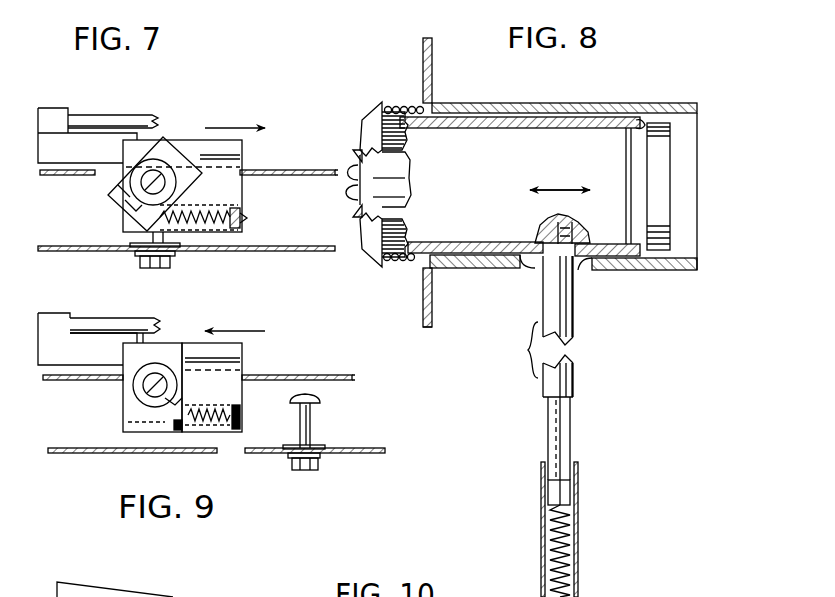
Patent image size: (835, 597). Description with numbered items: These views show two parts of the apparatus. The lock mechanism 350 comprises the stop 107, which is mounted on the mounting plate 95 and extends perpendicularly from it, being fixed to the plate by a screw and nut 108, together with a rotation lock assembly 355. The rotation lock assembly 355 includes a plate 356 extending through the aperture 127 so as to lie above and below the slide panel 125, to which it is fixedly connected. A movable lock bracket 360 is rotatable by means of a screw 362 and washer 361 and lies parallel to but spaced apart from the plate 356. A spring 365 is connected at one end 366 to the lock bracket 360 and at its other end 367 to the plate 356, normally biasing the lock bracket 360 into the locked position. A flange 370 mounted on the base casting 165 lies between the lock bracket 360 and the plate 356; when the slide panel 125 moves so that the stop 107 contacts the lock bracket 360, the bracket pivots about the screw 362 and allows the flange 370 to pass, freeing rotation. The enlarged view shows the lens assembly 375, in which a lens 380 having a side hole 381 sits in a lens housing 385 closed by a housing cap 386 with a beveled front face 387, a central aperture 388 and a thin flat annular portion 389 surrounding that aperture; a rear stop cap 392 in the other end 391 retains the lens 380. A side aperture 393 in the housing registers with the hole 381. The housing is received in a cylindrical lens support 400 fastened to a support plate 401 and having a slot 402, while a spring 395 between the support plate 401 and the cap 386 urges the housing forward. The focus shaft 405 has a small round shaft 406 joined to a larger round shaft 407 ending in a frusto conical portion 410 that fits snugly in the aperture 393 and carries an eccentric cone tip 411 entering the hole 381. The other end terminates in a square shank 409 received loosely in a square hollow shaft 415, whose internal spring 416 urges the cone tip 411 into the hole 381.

In FIG. 7, the flange 370 is at (93, 150).
In FIG. 9, the flange 370 is at (80, 352).
In FIG. 7, the base casting 165 is at (138, 118).
In FIG. 9, the base casting 165 is at (140, 325).
In FIG. 7, the lock mechanism 350 is at (278, 88).
In FIG. 9, the lock mechanism 350 is at (208, 317).
In FIG. 7, the aperture 127 is at (248, 170).
In FIG. 9, the aperture 127 is at (246, 374).
In FIG. 7, the slide panel 125 is at (316, 161).
In FIG. 9, the slide panel 125 is at (306, 376).
In FIG. 7, the rotation lock assembly 355 is at (100, 190).
In FIG. 9, the rotation lock assembly 355 is at (118, 393).
In FIG. 7, the plate 356 is at (233, 192).
In FIG. 7, the lock bracket 360 is at (113, 193).
In FIG. 9, the lock bracket 360 is at (130, 413).
In FIG. 9, the washer 361 is at (135, 388).
In FIG. 9, the screw 362 is at (163, 391).
In FIG. 7, the spring 365 is at (217, 222).
In FIG. 9, the spring 365 is at (223, 442).
In FIG. 9, the spring end 366 is at (167, 420).
In FIG. 9, the spring end 367 is at (243, 420).
In FIG. 7, the stop 107 is at (147, 238).
In FIG. 9, the stop 107 is at (310, 413).
In FIG. 7, the screw and nut 108 is at (170, 265).
In FIG. 9, the screw and nut 108 is at (320, 467).
In FIG. 7, the mounting plate 95 is at (292, 246).
In FIG. 9, the mounting plate 95 is at (379, 447).
In FIG. 8, the lens assembly 375 is at (650, 94).
In FIG. 8, the lens 380 is at (548, 164).
In FIG. 8, the lens housing 385 is at (462, 117).
In FIG. 8, the housing cap 386 is at (363, 115).
In FIG. 8, the beveled front face 387 is at (358, 137).
In FIG. 8, the aperture 388 is at (373, 197).
In FIG. 8, the flat annular portion 389 is at (373, 178).
In FIG. 8, the other end of lens housing 391 is at (640, 125).
In FIG. 8, the rear stop cap 392 is at (662, 198).
In FIG. 8, the hole 381 is at (578, 222).
In FIG. 8, the cone tip 411 is at (575, 238).
In FIG. 8, the frusto conical portion 410 is at (540, 235).
In FIG. 8, the aperture 393 is at (548, 262).
In FIG. 8, the spring 395 is at (401, 264).
In FIG. 8, the lens support 400 is at (470, 270).
In FIG. 8, the support plate 401 is at (428, 327).
In FIG. 8, the slot 402 is at (587, 270).
In FIG. 8, the focus shaft 405 is at (580, 452).
In FIG. 8, the small round shaft 406 is at (555, 427).
In FIG. 8, the larger diameter round shaft 407 is at (573, 348).
In FIG. 8, the square shank 409 is at (565, 493).
In FIG. 8, the square hollow shaft 415 is at (578, 562).
In FIG. 8, the spring 416 is at (553, 540).